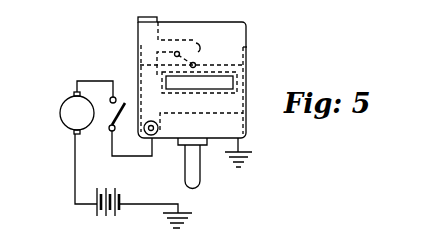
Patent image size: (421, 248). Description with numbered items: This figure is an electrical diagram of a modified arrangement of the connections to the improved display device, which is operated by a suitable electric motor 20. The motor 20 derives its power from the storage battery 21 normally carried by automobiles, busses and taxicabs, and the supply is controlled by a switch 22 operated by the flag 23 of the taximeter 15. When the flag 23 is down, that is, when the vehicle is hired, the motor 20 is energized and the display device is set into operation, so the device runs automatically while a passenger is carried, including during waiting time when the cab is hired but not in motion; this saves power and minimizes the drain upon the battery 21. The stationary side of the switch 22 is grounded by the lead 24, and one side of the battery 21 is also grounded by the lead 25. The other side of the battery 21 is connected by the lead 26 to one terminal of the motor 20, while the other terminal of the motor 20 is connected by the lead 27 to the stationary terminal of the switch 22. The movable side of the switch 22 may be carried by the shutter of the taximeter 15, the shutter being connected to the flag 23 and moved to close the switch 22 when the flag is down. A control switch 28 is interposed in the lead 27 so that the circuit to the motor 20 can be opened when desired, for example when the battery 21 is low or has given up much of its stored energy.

The taximeter 15 is at (248, 40).
The electric motor 20 is at (61, 114).
The storage battery 21 is at (105, 196).
The switch 22 is at (159, 128).
The flag 23 is at (157, 17).
The lead 24 is at (240, 152).
The lead 25 is at (173, 204).
The lead 26 is at (73, 170).
The lead 27 is at (88, 81).
The control switch 28 is at (122, 99).